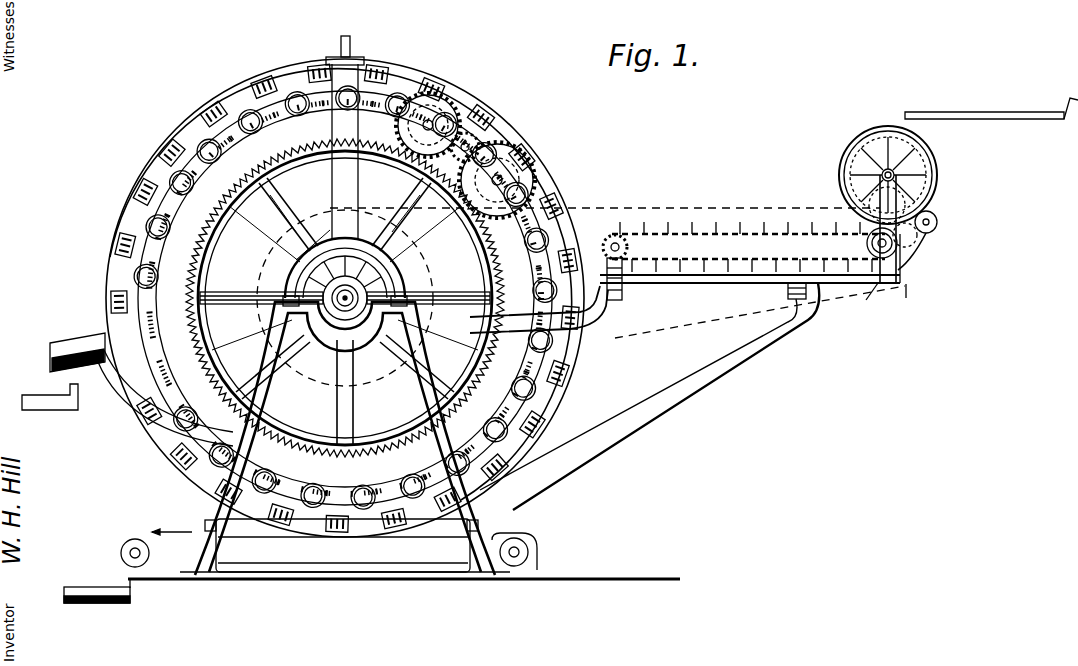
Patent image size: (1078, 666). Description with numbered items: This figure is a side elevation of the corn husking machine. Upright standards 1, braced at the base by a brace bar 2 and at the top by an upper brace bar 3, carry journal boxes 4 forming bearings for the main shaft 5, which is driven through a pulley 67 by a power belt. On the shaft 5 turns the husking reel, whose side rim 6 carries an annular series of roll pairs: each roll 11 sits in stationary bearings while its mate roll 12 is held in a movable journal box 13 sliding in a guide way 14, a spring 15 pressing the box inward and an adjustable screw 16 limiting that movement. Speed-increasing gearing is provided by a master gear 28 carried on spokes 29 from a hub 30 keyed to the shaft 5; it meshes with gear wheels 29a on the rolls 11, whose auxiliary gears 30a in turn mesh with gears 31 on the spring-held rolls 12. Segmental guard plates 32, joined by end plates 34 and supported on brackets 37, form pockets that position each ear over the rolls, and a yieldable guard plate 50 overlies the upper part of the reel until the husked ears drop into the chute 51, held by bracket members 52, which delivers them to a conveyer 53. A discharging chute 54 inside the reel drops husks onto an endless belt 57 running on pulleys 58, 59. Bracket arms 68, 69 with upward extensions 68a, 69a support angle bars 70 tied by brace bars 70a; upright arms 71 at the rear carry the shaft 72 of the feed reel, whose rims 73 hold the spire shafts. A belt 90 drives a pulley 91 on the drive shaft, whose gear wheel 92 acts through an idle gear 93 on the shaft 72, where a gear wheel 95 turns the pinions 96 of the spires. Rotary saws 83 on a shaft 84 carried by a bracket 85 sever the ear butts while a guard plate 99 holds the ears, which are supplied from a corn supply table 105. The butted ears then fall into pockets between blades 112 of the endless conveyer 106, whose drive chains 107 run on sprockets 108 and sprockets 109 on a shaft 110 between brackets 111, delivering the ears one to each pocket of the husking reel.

The upright supports or standards 1 is at (256, 410).
The brace bar 2 is at (204, 526).
The upper brace bar 3 is at (351, 48).
The journal boxes 4 is at (382, 290).
The shaft 5 is at (292, 286).
The side rim 6 is at (520, 396).
The roll 11 is at (300, 160).
The roll 12 is at (300, 104).
The movable journal boxes 13 is at (312, 118).
The guide ways 14 is at (142, 286).
The spring 15 is at (248, 132).
The adjustable screw or bolt 16 is at (332, 60).
The master gear 28 is at (394, 164).
The spokes 29 is at (280, 206).
The gear wheels 29a is at (450, 104).
The hub 30 is at (345, 284).
The auxiliary gear wheel 30a is at (478, 132).
The gear 31 is at (530, 150).
The guard plates 32 is at (222, 108).
The end plates 34 is at (130, 226).
The brackets 37 is at (136, 198).
The guard plate 50 is at (268, 78).
The chute 51 is at (84, 346).
The bracket members 52 is at (140, 406).
The drag or conveyer 53 is at (58, 412).
The discharging chute 54 is at (252, 272).
The endless belt 57 is at (326, 575).
The pulley 58 is at (120, 552).
The pulley 59 is at (530, 550).
The pulley 67 is at (270, 258).
The bracket arm 68 is at (680, 408).
The upward extension 68a is at (796, 299).
The bracket arm 69 is at (600, 328).
The upward extension 69a is at (623, 292).
The angle bars 70 is at (614, 302).
The transverse brace bars 70a is at (868, 286).
The upright bracket arms 71 is at (870, 216).
The shaft 72 is at (926, 158).
The end supports or rims 73 is at (842, 184).
The rotary saws 83 is at (938, 228).
The shaft 84 is at (934, 222).
The bracket 85 is at (904, 268).
The belt 90 is at (724, 208).
The pulley 91 is at (907, 302).
The gear wheel 92 is at (871, 301).
The idle gear 93 is at (936, 198).
The gear wheel 95 is at (922, 146).
The pinions 96 is at (848, 160).
The guard plate 99 is at (858, 146).
The corn supply table 105 is at (998, 110).
The endless conveyer 106 is at (752, 234).
The drive chains 107 is at (660, 234).
The sprockets 108 is at (900, 250).
The sprockets 109 is at (618, 236).
The shaft 110 is at (630, 248).
The brackets 111 is at (600, 224).
The blades or wings 112 is at (790, 234).